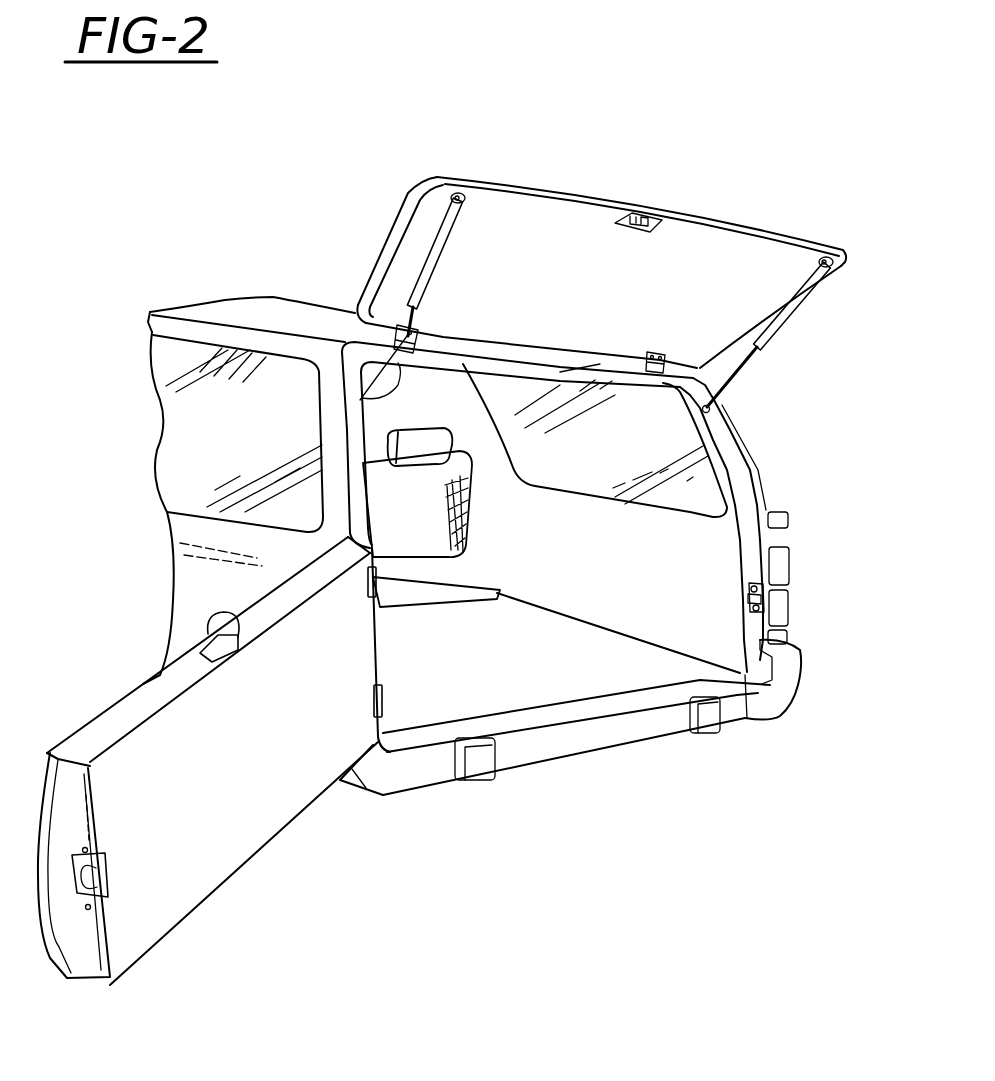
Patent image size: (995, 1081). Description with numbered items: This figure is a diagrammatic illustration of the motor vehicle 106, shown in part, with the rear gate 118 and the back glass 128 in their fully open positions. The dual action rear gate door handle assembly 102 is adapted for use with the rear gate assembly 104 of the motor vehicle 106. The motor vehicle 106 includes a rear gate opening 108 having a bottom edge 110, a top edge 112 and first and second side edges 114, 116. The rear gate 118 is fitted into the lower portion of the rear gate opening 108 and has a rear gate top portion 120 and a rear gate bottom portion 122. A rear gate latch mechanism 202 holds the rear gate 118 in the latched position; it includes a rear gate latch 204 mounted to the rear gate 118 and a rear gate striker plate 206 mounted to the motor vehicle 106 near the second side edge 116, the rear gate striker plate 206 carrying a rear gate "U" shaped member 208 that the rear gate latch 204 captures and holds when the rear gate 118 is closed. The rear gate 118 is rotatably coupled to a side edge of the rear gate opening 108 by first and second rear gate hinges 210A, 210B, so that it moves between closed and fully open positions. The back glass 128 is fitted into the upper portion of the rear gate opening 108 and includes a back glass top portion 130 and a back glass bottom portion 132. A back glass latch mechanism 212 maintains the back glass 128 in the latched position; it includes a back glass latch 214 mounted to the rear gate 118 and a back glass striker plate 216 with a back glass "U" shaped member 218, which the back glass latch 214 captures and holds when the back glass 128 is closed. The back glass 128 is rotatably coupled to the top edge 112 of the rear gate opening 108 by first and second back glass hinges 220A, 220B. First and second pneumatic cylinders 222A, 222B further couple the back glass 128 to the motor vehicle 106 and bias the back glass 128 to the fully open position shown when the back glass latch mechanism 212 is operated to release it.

The vehicle 102 is at (416, 893).
The body side panel 104 is at (137, 538).
The roof 106 is at (207, 310).
The rear pillar 108 is at (752, 547).
The rear bumper 110 is at (583, 703).
The rear opening frame 112 is at (362, 398).
The seat 114 is at (460, 572).
The rear corner panel 116 is at (747, 643).
The tailgate upper edge 118 is at (113, 688).
The tailgate end face 120 is at (74, 692).
The tailgate 122 is at (263, 905).
The liftgate 128 is at (488, 145).
The liftgate hinge 130 is at (327, 280).
The liftgate window 132 is at (620, 155).
The tailgate latch 202 is at (138, 894).
The latch fastener 204 is at (72, 870).
The pillar striker 206 is at (793, 611).
The pillar latch 208 is at (748, 590).
The tailgate hinge 210A is at (375, 577).
The tailgate hinge 210B is at (382, 703).
The latch bracket 212 is at (182, 635).
The striker loop 214 is at (233, 620).
The clip 216 is at (670, 250).
The liftgate bracket 218 is at (640, 215).
The strut bracket 220A is at (418, 340).
The strut bracket 220B is at (650, 353).
The gas strut 222A is at (443, 242).
The gas strut 222B is at (780, 320).